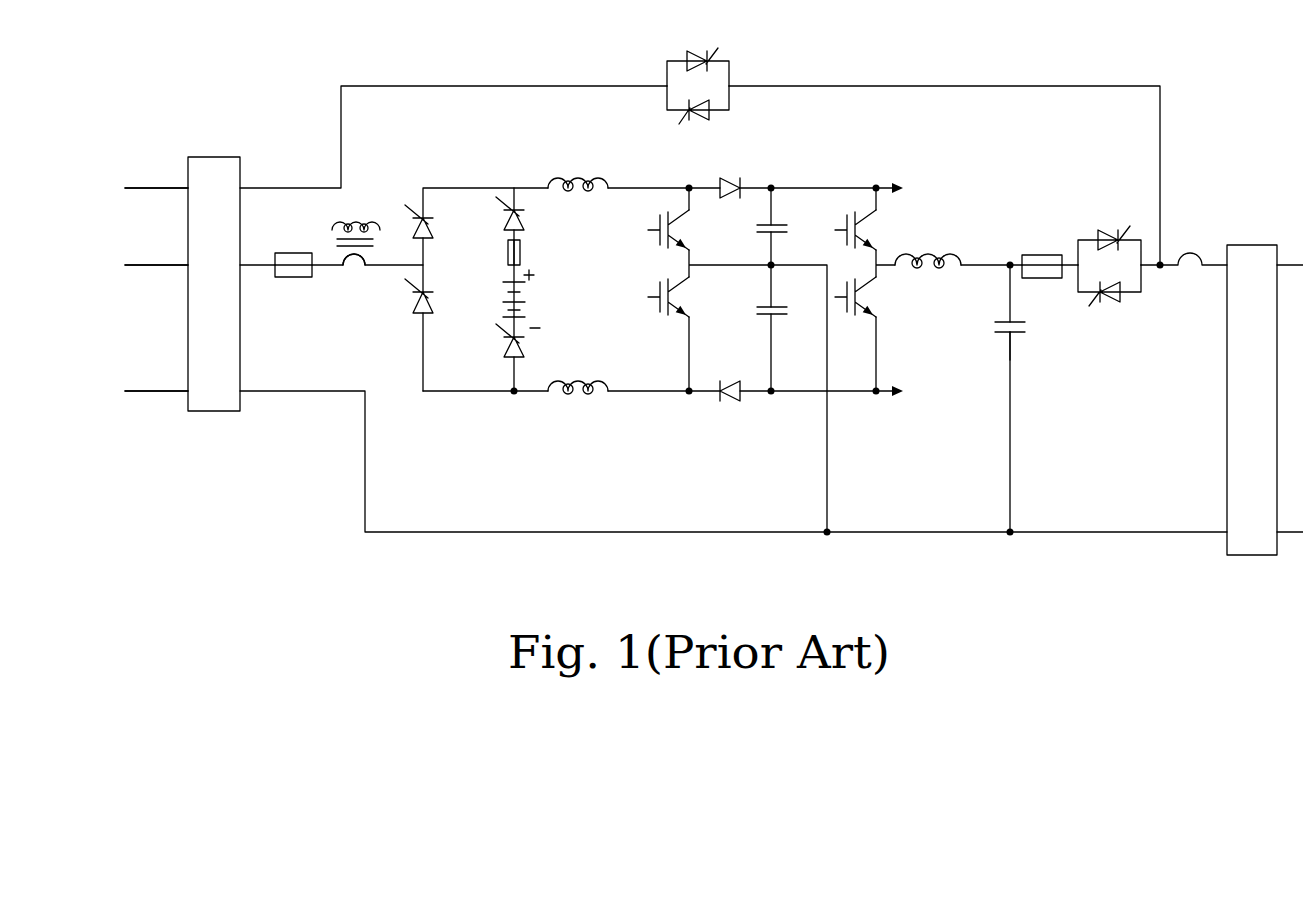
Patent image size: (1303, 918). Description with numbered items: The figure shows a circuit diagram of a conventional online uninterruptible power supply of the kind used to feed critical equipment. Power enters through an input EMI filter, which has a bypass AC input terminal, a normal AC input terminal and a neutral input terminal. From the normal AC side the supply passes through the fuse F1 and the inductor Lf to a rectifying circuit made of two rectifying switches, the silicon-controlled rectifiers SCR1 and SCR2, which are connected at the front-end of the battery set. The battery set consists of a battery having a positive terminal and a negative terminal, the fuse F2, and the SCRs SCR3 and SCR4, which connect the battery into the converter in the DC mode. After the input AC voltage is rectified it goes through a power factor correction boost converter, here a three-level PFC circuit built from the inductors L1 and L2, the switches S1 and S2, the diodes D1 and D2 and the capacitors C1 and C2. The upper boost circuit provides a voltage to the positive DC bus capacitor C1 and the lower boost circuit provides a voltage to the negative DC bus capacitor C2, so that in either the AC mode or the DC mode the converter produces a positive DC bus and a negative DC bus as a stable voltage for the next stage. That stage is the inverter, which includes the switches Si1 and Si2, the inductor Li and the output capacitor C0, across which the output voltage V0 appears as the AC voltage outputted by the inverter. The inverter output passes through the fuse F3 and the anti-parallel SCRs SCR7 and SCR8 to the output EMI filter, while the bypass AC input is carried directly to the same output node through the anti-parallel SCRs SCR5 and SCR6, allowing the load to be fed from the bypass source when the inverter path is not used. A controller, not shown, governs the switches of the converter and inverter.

The bypass AC input terminal bypass AC is at (129, 173).
The normal AC input terminal normal AC is at (129, 250).
The neutral input terminal neutral is at (150, 376).
The input electrical magnetic interference filter input EMI filter is at (214, 284).
The fuse F1 is at (293, 282).
The inductor Lf is at (356, 225).
The silicon-controlled rectifier SCR1 is at (446, 221).
The silicon-controlled rectifier SCR2 is at (446, 296).
The silicon-controlled rectifier SCR3 is at (537, 215).
The silicon-controlled rectifier SCR4 is at (537, 345).
The fuse F2 is at (527, 254).
The element battery is at (553, 299).
The inductor L1 is at (578, 168).
The inductor L2 is at (578, 407).
The switch S1 is at (681, 230).
The switch S2 is at (681, 297).
The diode D1 is at (732, 171).
The diode D2 is at (732, 408).
The positive DC bus capacitor C1 is at (786, 232).
The negative DC bus capacitor C2 is at (786, 314).
The switch Si1 is at (871, 230).
The switch Si2 is at (871, 297).
The inductor Li is at (928, 244).
The output capacitor C0 is at (998, 315).
The output voltage V0 is at (1029, 349).
The fuse F3 is at (1042, 251).
The silicon-controlled rectifier SCR7 is at (1109, 233).
The silicon-controlled rectifier SCR8 is at (1109, 301).
The silicon-controlled rectifier SCR5 is at (698, 53).
The silicon-controlled rectifier SCR6 is at (678, 114).